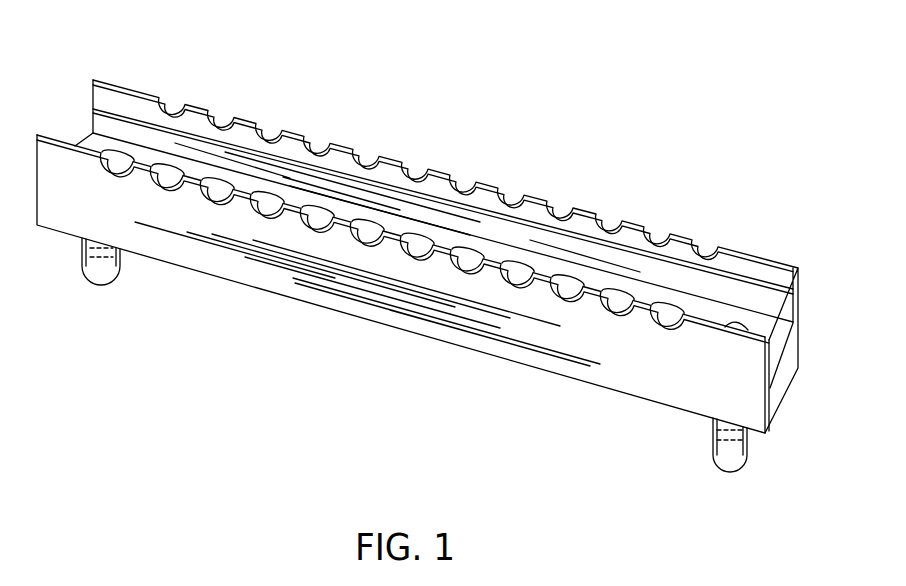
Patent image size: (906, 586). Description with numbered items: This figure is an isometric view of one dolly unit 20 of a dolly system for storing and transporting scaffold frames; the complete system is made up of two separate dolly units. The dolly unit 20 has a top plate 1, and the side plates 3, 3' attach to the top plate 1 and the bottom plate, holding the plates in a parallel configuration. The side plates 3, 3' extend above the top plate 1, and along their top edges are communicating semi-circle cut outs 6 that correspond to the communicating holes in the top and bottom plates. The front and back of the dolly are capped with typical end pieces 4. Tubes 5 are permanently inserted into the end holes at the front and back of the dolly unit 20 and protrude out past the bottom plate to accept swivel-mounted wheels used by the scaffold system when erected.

The top plate 1 is at (418, 273).
The side plate 3 is at (403, 292).
The side plate 3' is at (445, 172).
The end piece 4 is at (787, 378).
The tube 5 is at (100, 274).
The communicating semi-circle cut out 6 is at (180, 108).
The dolly unit 20 is at (428, 138).